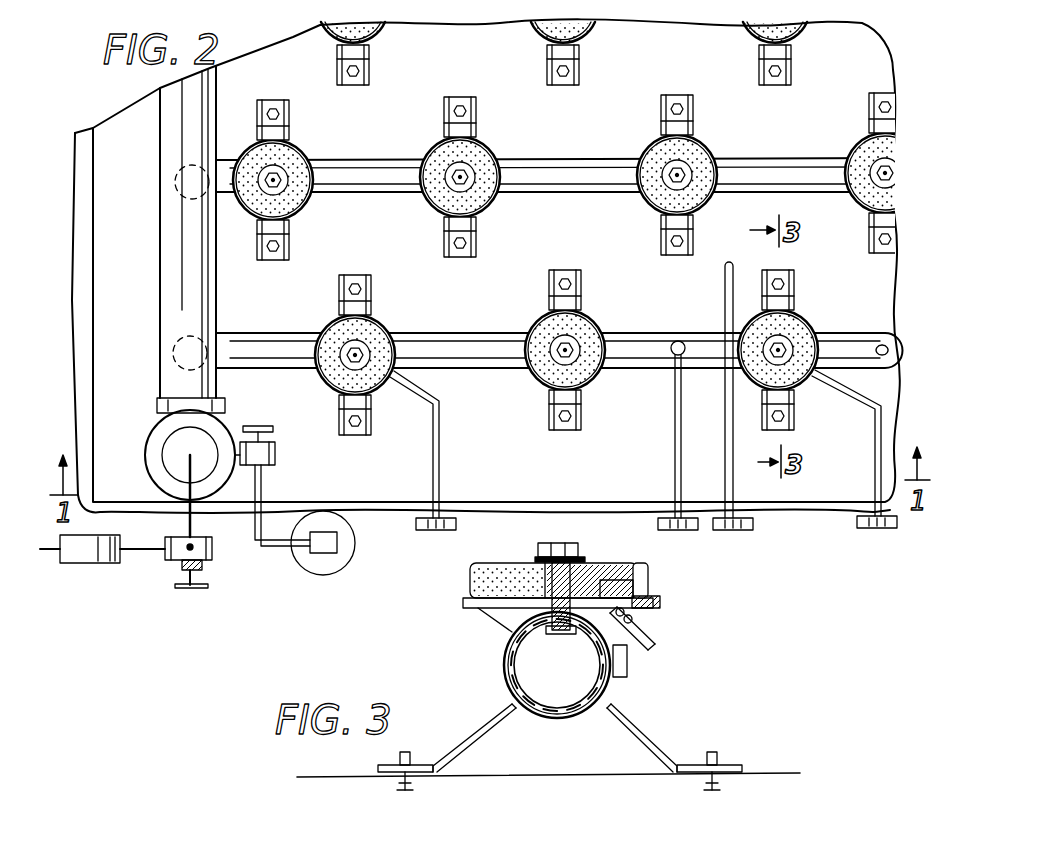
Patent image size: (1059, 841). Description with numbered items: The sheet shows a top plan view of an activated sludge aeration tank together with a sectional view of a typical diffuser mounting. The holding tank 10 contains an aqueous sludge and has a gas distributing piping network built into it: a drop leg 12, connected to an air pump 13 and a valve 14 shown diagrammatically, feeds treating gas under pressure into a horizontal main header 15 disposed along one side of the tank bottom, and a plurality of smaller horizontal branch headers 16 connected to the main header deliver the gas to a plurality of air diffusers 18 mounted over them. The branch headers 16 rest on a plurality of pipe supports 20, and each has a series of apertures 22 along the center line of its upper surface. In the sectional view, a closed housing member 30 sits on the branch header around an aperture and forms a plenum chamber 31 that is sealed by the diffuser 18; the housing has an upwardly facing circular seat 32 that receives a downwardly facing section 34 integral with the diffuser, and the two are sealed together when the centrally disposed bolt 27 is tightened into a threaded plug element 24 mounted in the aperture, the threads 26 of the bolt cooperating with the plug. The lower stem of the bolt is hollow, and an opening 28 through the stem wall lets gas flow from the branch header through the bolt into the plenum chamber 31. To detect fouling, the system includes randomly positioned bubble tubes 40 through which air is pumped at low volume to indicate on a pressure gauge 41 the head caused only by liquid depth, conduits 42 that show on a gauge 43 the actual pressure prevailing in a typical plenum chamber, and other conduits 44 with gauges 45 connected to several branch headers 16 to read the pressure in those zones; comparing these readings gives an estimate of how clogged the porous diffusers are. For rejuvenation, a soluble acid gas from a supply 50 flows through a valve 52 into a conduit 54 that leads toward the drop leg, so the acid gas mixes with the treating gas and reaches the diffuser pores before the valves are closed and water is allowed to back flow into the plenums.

In FIG. 2, the holding tank 10 is at (93, 307).
In FIG. 2, the drop leg 12 is at (170, 452).
In FIG. 2, the air pump 13 is at (98, 555).
In FIG. 2, the valve 14 is at (175, 562).
In FIG. 2, the main header 15 is at (188, 225).
In FIG. 2, the branch headers 16 is at (552, 172).
In FIG. 3, the branch headers 16 is at (505, 680).
In FIG. 2, the air diffusers 18 is at (548, 37).
In FIG. 3, the air diffusers 18 is at (470, 585).
In FIG. 2, the pipe supports 20 is at (289, 128).
In FIG. 3, the pipe supports 20 is at (642, 735).
In FIG. 3, the apertures 22 is at (570, 634).
In FIG. 3, the threaded plug element 24 is at (650, 625).
In FIG. 3, the threads 26 is at (552, 634).
In FIG. 3, the bolt 27 is at (538, 548).
In FIG. 3, the opening 28 is at (584, 596).
In FIG. 3, the housing member 30 is at (507, 615).
In FIG. 3, the plenum chamber 31 is at (642, 567).
In FIG. 3, the circular seat 32 is at (665, 601).
In FIG. 3, the downwardly facing section 34 is at (655, 588).
In FIG. 2, the bubble tubes 40 is at (725, 292).
In FIG. 2, the pressure gauge 41 is at (752, 518).
In FIG. 2, the conduits 42 is at (440, 426).
In FIG. 3, the conduits 42 is at (650, 640).
In FIG. 2, the gauge 43 is at (428, 518).
In FIG. 2, the conduits 44 is at (677, 434).
In FIG. 2, the gauges 45 is at (670, 518).
In FIG. 2, the supply 50 is at (305, 562).
In FIG. 2, the valve 52 is at (276, 457).
In FIG. 2, the conduit 54 is at (262, 548).